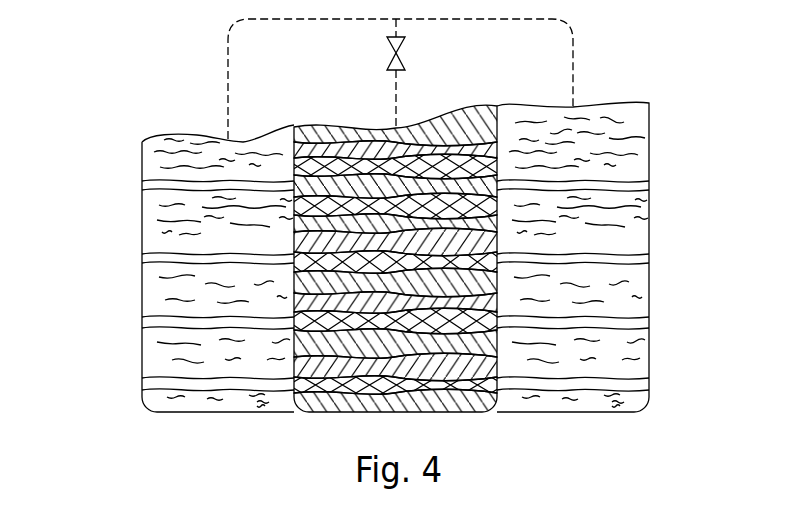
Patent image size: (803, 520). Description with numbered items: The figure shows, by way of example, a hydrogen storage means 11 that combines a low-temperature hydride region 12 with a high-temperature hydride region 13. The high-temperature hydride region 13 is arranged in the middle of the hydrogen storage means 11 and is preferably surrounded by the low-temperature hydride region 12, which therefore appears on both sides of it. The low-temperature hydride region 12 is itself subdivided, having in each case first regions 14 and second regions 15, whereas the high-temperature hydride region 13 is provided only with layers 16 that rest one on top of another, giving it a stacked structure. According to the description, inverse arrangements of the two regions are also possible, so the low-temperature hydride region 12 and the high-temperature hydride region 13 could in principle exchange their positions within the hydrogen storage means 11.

The hydrogen storage means 11 is at (128, 453).
The low-temperature hydride region 12 is at (202, 415).
The high-temperature hydride region 13 is at (325, 416).
The first regions 14 is at (145, 353).
The second regions 15 is at (145, 260).
The layers 16 is at (428, 363).